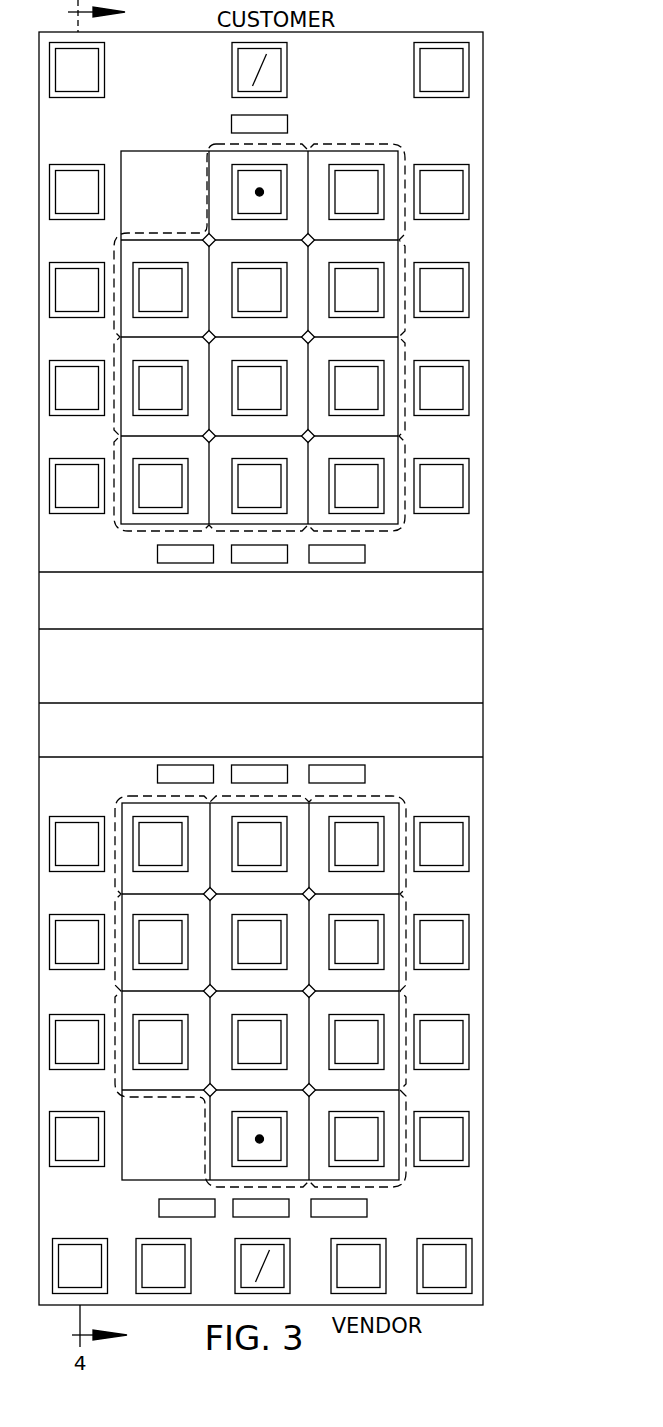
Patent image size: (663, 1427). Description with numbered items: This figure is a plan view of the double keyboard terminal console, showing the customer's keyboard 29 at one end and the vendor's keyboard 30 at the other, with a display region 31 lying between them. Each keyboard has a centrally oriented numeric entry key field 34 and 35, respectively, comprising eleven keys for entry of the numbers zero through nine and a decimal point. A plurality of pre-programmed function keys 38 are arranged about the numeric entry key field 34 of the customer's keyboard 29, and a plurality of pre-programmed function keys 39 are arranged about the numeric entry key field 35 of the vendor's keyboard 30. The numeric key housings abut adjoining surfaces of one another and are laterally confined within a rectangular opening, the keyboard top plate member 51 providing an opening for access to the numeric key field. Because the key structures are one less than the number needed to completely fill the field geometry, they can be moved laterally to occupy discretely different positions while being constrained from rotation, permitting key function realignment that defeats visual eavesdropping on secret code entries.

The customer's keyboard 29 is at (500, 335).
The vendor's keyboard 30 is at (498, 1000).
The display 31 is at (472, 682).
The numeric entry key field 34 is at (233, 238).
The numeric entry key field 35 is at (388, 920).
The pre-programmed function keys 38 is at (457, 88).
The pre-programmed function keys 39 is at (458, 1127).
The keyboard top plate member 51 is at (467, 788).